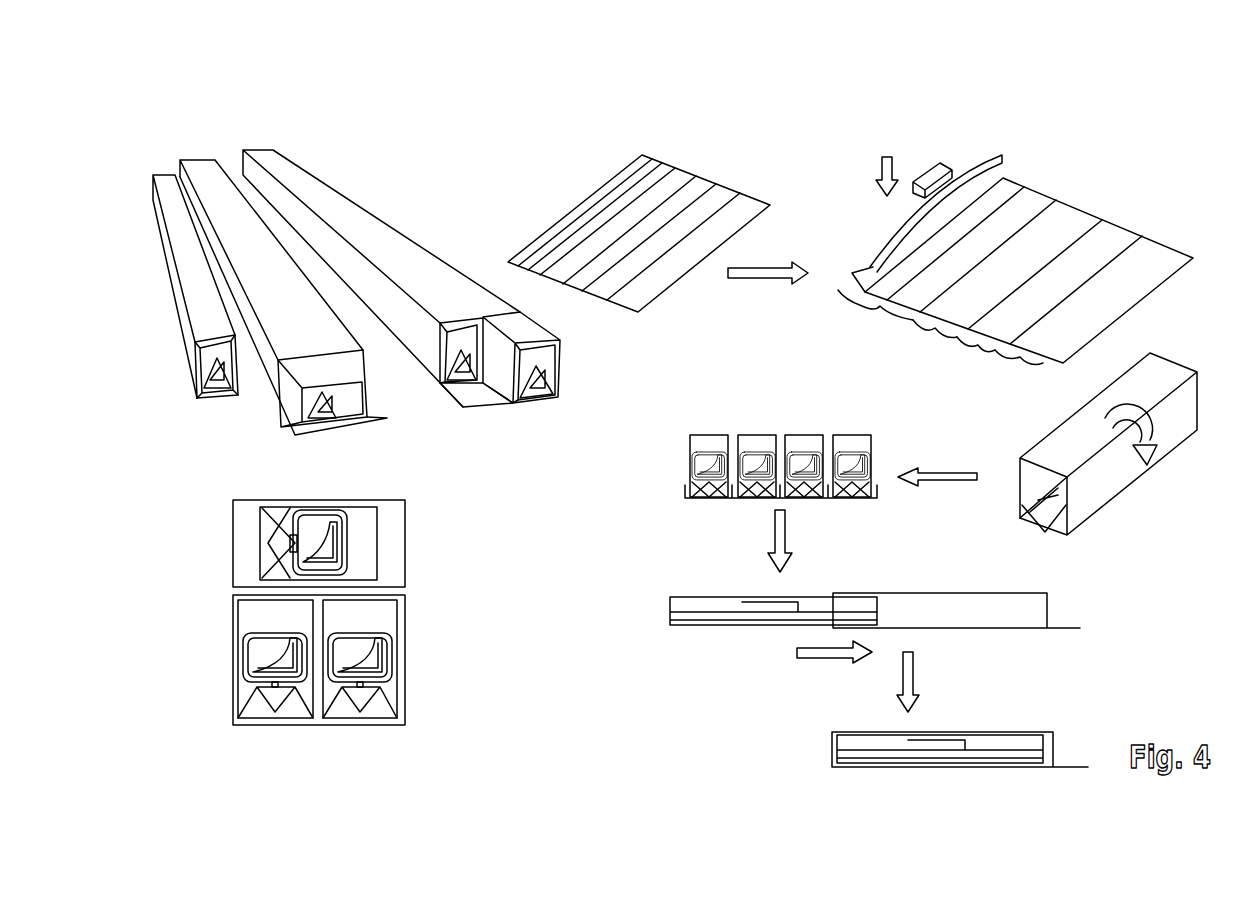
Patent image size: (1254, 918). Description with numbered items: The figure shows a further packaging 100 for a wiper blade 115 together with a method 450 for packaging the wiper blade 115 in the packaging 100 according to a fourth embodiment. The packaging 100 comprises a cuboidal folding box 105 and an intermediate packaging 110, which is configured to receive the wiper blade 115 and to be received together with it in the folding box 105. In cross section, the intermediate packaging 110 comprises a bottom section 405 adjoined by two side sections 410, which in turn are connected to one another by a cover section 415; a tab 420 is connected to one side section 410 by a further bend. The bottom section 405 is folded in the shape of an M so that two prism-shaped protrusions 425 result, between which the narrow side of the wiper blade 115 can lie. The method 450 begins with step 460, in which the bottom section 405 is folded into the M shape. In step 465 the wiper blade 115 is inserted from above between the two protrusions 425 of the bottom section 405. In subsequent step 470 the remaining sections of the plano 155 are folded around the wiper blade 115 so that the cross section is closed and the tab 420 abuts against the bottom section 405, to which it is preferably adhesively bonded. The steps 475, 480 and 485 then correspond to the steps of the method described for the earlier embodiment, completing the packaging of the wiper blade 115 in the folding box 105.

The packaging 100 is at (162, 167).
The folding box 105 is at (268, 358).
The intermediate packaging 110 is at (365, 387).
The wiper blade 115 is at (330, 398).
The plano 155 is at (575, 205).
The bottom section 405 is at (193, 742).
The side section 410 is at (200, 690).
The cover section 415 is at (200, 608).
The tab 420 is at (1188, 253).
The prism-shaped protrusion 425 is at (992, 173).
The method 450 is at (690, 122).
The step 460 is at (762, 280).
The step 465 is at (877, 168).
The step 470 is at (1167, 472).
The step 475 is at (947, 472).
The step 480 is at (773, 535).
The step 485 is at (915, 675).